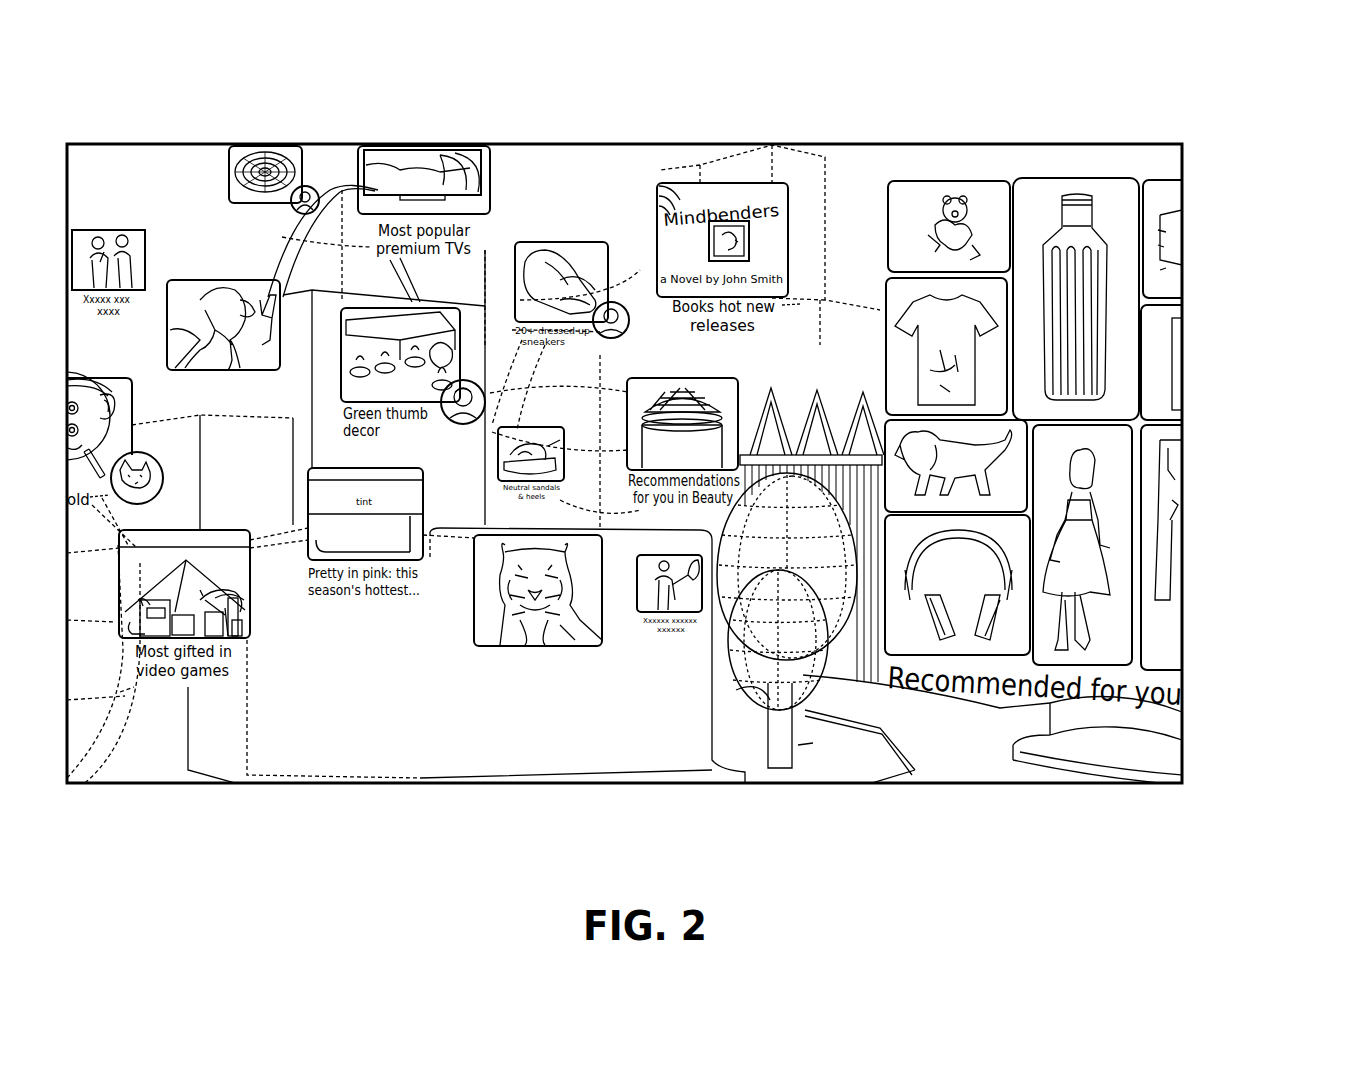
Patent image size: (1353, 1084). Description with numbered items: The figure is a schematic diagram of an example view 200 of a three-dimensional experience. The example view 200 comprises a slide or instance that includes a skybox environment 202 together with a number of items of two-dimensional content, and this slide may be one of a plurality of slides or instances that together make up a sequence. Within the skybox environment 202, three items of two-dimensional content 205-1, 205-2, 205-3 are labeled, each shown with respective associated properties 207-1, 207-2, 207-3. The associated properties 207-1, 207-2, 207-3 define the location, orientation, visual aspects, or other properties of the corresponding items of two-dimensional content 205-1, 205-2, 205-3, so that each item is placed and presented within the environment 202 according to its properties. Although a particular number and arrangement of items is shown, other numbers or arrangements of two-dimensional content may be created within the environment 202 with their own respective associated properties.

The example view 200 is at (1147, 96).
The skybox environment 202 is at (852, 190).
The item of two-dimensional content 205-1 is at (206, 239).
The associated properties 207-1 is at (197, 280).
The item of two-dimensional content 205-2 is at (521, 691).
The associated properties 207-2 is at (472, 628).
The item of two-dimensional content 205-3 is at (1175, 299).
The associated properties 207-3 is at (1110, 375).